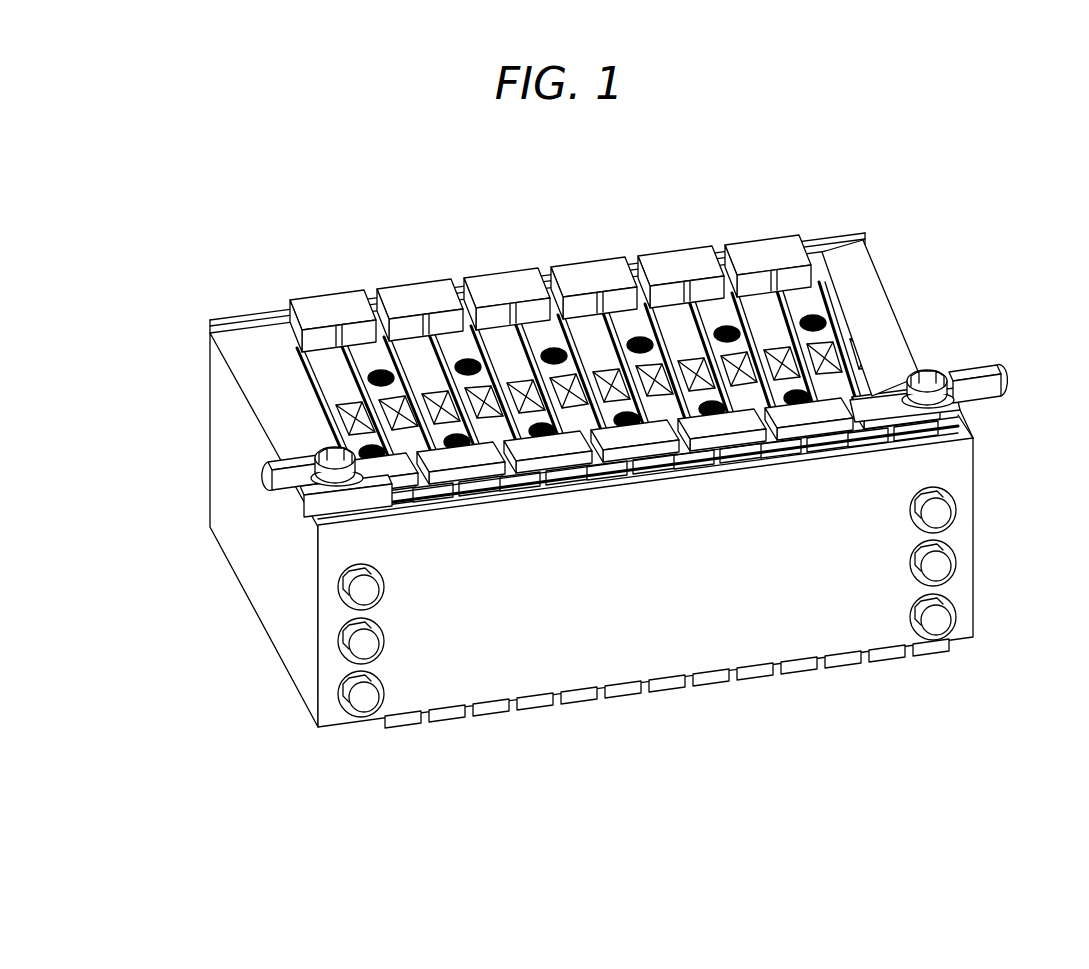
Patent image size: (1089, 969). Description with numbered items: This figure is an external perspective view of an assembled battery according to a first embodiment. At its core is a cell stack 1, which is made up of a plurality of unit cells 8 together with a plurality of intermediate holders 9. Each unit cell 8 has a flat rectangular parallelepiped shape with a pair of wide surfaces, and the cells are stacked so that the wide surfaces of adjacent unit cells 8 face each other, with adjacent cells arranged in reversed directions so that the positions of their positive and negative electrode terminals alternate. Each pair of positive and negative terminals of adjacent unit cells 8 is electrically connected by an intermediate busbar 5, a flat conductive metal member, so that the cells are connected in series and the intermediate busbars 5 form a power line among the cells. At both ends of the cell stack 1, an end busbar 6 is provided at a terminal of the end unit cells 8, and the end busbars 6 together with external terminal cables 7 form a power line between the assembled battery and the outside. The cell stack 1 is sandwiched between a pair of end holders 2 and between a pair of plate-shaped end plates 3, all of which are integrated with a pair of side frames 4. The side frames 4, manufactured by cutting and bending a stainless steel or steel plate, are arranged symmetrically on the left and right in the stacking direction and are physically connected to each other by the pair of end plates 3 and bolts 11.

The cell stack 1 is at (537, 249).
The end holder 2 is at (397, 513).
The end plate 3 is at (878, 303).
The side frame 4 is at (677, 640).
The intermediate busbar 5 is at (543, 452).
The end busbar 6 is at (340, 457).
The external terminal cable 7 is at (270, 492).
The unit cell 8 is at (813, 297).
The intermediate holder 9 is at (690, 463).
The bolt 11 is at (950, 518).